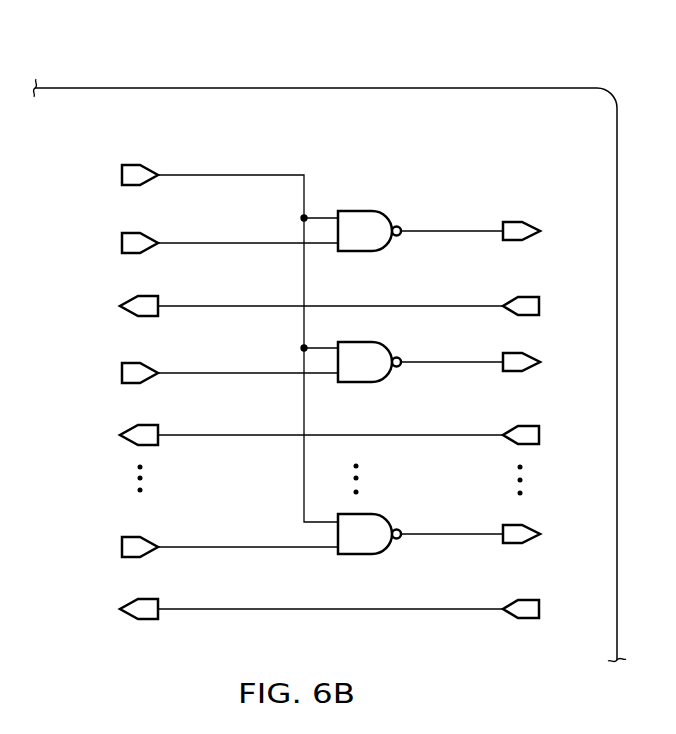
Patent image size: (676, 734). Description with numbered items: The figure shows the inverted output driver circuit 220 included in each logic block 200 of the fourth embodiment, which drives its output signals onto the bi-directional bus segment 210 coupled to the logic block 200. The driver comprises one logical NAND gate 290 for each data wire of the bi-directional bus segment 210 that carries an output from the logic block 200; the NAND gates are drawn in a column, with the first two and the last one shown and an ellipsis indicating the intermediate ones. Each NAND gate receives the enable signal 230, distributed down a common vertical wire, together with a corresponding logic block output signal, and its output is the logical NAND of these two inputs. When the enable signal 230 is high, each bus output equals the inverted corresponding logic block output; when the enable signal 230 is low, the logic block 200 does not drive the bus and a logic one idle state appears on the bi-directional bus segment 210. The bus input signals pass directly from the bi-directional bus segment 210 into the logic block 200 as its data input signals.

The logic block 200 is at (528, 95).
The bi-directional bus segment 210 is at (563, 309).
The inverted output driver circuit 220 is at (359, 125).
The enable signal 230 is at (122, 175).
The logical NAND gate 290 is at (398, 362).